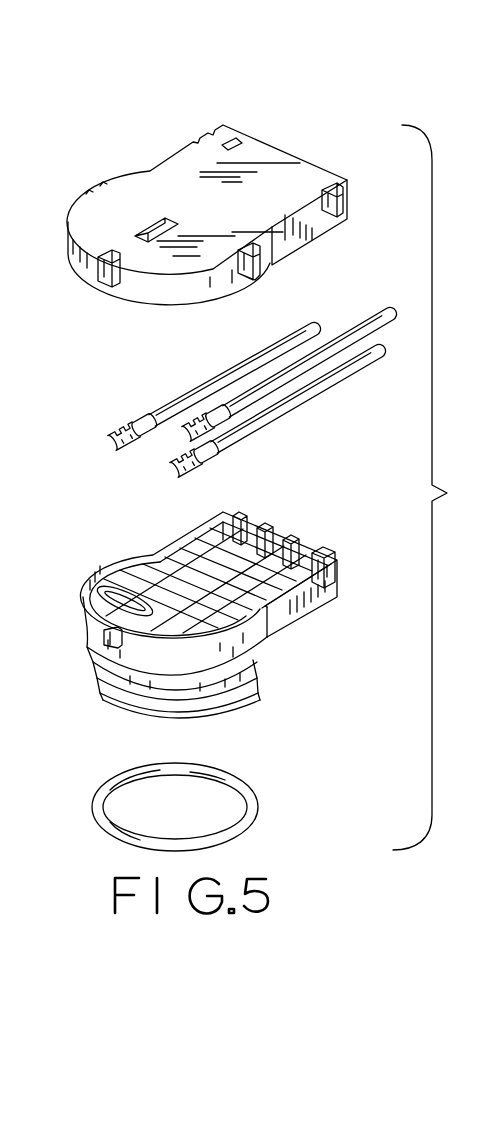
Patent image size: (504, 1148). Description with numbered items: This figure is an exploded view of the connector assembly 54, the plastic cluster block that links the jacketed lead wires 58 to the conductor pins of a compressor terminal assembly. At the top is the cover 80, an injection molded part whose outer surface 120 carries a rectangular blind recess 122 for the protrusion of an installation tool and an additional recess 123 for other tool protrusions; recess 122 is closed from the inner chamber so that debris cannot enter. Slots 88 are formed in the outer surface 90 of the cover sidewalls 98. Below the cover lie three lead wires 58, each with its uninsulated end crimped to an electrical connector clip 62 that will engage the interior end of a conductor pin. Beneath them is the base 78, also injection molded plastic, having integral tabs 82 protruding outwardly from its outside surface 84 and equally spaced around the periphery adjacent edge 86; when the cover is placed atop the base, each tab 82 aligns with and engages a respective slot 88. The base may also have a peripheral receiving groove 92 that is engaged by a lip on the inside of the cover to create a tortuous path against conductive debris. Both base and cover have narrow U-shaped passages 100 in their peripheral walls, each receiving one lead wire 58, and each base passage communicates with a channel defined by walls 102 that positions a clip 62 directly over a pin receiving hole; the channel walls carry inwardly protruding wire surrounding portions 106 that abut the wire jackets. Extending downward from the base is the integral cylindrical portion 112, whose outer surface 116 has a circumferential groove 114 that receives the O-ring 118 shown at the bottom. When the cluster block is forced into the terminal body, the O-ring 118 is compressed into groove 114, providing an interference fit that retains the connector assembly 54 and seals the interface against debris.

The connector assembly 54 is at (441, 487).
The jacketed lead wires 58 is at (260, 369).
The electrical connector clip 62 is at (205, 470).
The base 78 is at (224, 602).
The cover 80 is at (242, 199).
The tabs 82 is at (333, 572).
The outside surface 84 is at (326, 590).
The edge 86 is at (303, 546).
The slots 88 is at (336, 198).
The outer surface 90 is at (310, 224).
The peripheral receiving groove 92 is at (270, 606).
The sidewalls 98 is at (232, 290).
The U-shaped passages 100 is at (150, 597).
The channel walls 102 is at (291, 527).
The wire surrounding portions 106 is at (190, 560).
The cylindrical portion 112 is at (256, 703).
The groove 114 is at (100, 681).
The outer surface 116 is at (120, 700).
The O-ring 118 is at (232, 779).
The outer surface 120 is at (203, 163).
The blind recess 122 is at (150, 228).
The additional recess 123 is at (233, 141).